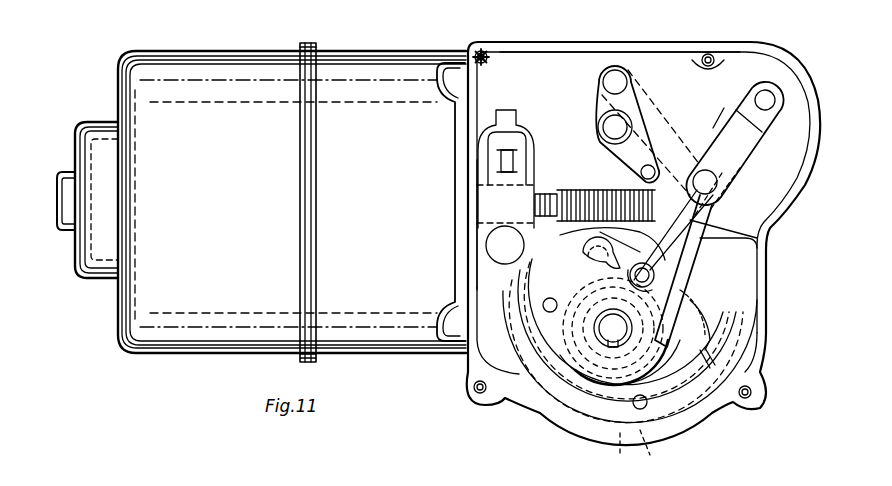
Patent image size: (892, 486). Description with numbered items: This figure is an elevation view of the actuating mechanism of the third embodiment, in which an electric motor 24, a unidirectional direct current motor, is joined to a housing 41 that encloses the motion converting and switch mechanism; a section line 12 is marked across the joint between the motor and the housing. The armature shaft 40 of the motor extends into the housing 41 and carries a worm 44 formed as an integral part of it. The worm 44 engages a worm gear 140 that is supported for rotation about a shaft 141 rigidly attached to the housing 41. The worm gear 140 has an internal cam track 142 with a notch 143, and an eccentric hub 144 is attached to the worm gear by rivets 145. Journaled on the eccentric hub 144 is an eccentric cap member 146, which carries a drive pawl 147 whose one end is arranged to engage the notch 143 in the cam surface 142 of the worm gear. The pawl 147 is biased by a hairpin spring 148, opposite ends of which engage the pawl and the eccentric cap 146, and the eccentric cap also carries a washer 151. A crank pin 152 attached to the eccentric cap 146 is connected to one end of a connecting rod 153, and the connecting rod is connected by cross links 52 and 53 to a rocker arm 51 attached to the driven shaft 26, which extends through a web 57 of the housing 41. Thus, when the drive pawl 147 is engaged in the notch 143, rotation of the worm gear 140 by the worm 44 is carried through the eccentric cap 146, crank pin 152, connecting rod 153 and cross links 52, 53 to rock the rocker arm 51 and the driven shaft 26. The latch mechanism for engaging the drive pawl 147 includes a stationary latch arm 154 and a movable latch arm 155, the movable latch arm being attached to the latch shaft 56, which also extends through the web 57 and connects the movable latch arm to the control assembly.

The section line 12 is at (572, 158).
The electric motor 24 is at (415, 47).
The driven shaft 26 is at (624, 124).
The armature shaft 40 is at (505, 245).
The housing 41 is at (794, 58).
The worm 44 is at (650, 206).
The rocker arm 51 is at (590, 110).
The cross link 52 is at (644, 72).
The cross link 53 is at (724, 108).
The latch shaft 56 is at (505, 204).
The web 57 is at (544, 62).
The worm gear 140 is at (702, 276).
The shaft 141 is at (610, 343).
The internal cam track 142 is at (556, 388).
The notch 143 is at (588, 247).
The eccentric hub 144 is at (620, 430).
The rivet 145 is at (545, 304).
The eccentric cap member 146 is at (560, 415).
The drive pawl 147 is at (722, 346).
The hairpin spring 148 is at (652, 260).
The washer 151 is at (660, 304).
The crank pin 152 is at (700, 246).
The connecting rod 153 is at (748, 170).
The stationary latch arm 154 is at (493, 122).
The movable latch arm 155 is at (477, 195).